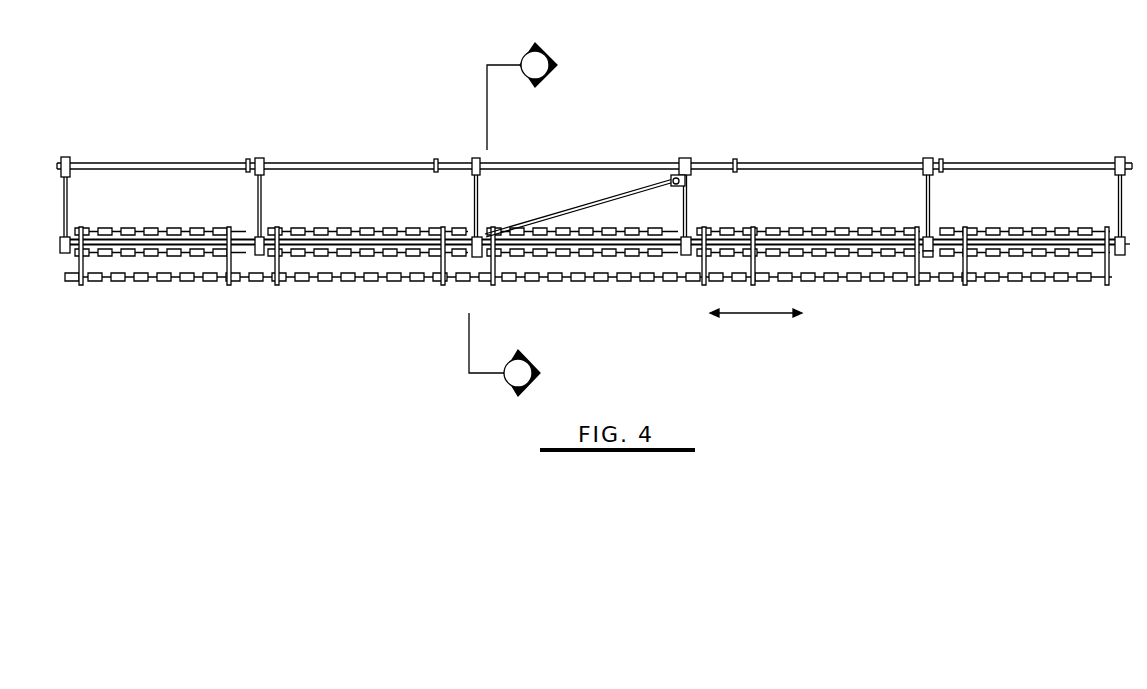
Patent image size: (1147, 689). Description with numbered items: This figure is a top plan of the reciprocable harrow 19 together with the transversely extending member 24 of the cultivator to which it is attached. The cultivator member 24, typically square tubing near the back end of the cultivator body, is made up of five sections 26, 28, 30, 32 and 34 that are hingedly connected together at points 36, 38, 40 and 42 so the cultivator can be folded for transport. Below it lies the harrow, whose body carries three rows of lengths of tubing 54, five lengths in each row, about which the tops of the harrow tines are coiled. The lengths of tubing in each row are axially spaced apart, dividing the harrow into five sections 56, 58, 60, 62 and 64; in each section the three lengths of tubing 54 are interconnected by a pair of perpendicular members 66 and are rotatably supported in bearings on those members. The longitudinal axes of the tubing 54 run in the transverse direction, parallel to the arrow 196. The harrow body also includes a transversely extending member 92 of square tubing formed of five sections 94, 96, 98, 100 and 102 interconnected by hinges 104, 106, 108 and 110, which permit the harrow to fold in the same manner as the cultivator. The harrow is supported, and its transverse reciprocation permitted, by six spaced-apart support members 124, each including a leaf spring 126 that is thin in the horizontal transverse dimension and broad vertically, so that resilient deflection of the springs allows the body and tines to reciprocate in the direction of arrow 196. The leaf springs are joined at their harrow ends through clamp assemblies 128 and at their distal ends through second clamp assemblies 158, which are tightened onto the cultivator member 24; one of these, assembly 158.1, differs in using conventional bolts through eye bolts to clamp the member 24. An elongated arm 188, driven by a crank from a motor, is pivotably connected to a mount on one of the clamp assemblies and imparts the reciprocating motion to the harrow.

The reciprocable harrow 19 is at (660, 86).
The transversely extending member 24 is at (608, 161).
The section of member 24 26 is at (150, 162).
The section of member 24 28 is at (340, 162).
The section of member 24 30 is at (650, 162).
The section of member 24 32 is at (812, 163).
The section of member 24 34 is at (1000, 163).
The hinge point 36 is at (247, 159).
The hinge point 38 is at (436, 159).
The hinge point 40 is at (737, 163).
The hinge point 42 is at (942, 160).
The length of tubing 54 is at (180, 285).
The harrow section 56 is at (157, 227).
The harrow section 58 is at (350, 227).
The harrow section 60 is at (562, 196).
The harrow section 62 is at (842, 226).
The harrow section 64 is at (1075, 182).
The perpendicular member 66 is at (441, 270).
The transversely extending member 92 is at (588, 268).
The section of member 92 94 is at (125, 246).
The section of member 92 96 is at (375, 248).
The section of member 92 98 is at (633, 247).
The section of member 92 100 is at (860, 248).
The section of member 92 102 is at (1065, 248).
The hinge 104 is at (255, 240).
The hinge 106 is at (471, 238).
The hinge 108 is at (692, 240).
The hinge 110 is at (934, 240).
The support member 124 is at (482, 186).
The leaf spring 126 is at (70, 178).
The clamp assembly 128 is at (932, 262).
The second clamp assembly 158 is at (262, 158).
The clamp assembly 158.1 is at (692, 160).
The elongated arm 188 is at (548, 218).
The arrow 196 is at (772, 316).